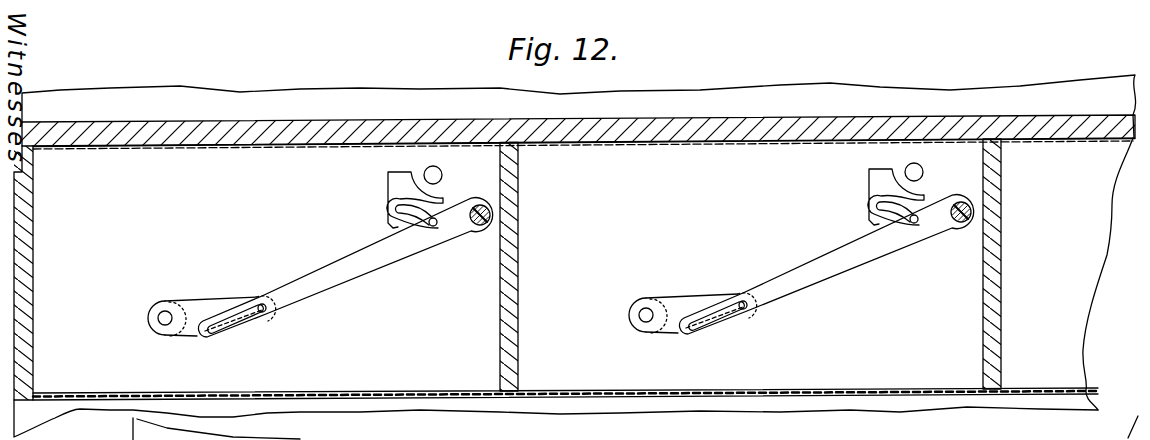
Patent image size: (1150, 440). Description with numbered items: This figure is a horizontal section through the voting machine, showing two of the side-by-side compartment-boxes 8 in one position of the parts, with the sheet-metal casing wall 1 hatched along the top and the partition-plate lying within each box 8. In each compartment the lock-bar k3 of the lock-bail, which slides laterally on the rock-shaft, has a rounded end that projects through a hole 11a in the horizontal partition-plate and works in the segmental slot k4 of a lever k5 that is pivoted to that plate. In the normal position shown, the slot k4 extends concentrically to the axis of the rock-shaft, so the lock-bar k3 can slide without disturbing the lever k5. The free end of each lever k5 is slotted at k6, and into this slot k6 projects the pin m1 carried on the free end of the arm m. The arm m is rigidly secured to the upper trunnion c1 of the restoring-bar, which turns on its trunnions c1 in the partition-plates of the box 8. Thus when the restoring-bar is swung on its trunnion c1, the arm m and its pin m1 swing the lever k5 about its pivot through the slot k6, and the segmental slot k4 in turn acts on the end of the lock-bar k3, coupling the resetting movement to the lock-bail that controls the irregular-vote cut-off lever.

The casing top wall 1 is at (862, 121).
The compartment-box 8 is at (298, 149).
The hole 11a is at (867, 177).
The lock-bar k3 is at (437, 219).
The segmental slot k4 is at (910, 282).
The lever k5 is at (350, 277).
The slot k6 is at (235, 322).
The arm m is at (210, 300).
The pin m1 is at (263, 302).
The trunnion c1 is at (650, 317).